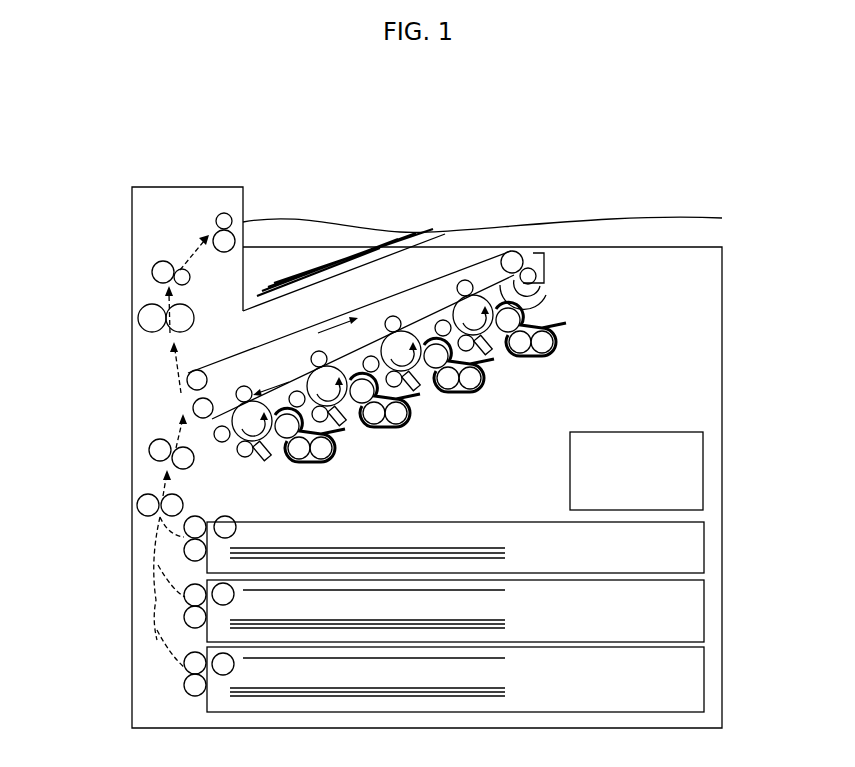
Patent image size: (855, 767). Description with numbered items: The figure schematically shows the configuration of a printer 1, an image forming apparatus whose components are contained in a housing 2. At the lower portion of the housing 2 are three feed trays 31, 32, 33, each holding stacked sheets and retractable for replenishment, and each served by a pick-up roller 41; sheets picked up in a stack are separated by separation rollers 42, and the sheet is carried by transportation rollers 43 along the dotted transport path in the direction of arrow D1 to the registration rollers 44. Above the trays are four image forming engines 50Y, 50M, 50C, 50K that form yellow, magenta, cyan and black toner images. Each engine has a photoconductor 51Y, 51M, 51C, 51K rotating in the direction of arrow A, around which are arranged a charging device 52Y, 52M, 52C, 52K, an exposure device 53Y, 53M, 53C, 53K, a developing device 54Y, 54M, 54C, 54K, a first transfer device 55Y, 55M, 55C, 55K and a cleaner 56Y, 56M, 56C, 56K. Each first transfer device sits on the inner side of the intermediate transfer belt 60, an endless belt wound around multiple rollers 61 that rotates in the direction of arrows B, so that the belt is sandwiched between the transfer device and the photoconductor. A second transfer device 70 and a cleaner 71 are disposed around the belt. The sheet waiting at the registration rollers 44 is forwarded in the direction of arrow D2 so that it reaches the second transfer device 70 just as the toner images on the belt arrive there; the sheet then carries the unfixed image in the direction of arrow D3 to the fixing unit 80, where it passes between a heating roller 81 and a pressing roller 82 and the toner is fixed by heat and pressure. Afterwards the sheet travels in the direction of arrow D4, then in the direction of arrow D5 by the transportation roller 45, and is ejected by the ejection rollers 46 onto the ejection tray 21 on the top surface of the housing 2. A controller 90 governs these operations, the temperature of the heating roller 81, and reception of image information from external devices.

The printer 1 is at (592, 172).
The housing 2 is at (723, 299).
The ejection tray 21 is at (446, 243).
The feed tray 31 is at (704, 543).
The feed tray 32 is at (704, 611).
The feed tray 33 is at (704, 681).
The pick-up roller 41 is at (236, 524).
The separation roller 42 is at (196, 516).
The transportation roller 43 is at (138, 505).
The registration roller 44 is at (150, 451).
The transportation roller 45 is at (156, 266).
The ejection roller 46 is at (221, 212).
The image forming engine 50K is at (302, 417).
The image forming engine 50C is at (368, 384).
The image forming engine 50M is at (432, 357).
The image forming engine 50Y is at (518, 304).
The photoconductor 51K is at (243, 404).
The photoconductor 51C is at (318, 368).
The photoconductor 51M is at (392, 336).
The photoconductor 51Y is at (465, 300).
The charging device 52K is at (248, 458).
The charging device 52C is at (340, 428).
The charging device 52M is at (412, 395).
The charging device 52Y is at (485, 362).
The exposure device 53K is at (306, 464).
The exposure device 53C is at (382, 430).
The exposure device 53M is at (456, 393).
The exposure device 53Y is at (535, 340).
The developing device 54K is at (287, 426).
The developing device 54C is at (362, 391).
The developing device 54M is at (436, 356).
The developing device 54Y is at (566, 323).
The first transfer device 55K is at (246, 386).
The first transfer device 55C is at (318, 350).
The first transfer device 55M is at (392, 316).
The first transfer device 55Y is at (466, 281).
The cleaner 56K is at (222, 443).
The cleaner 56C is at (293, 392).
The cleaner 56M is at (368, 358).
The cleaner 56Y is at (443, 320).
The intermediate transfer belt 60 is at (550, 292).
The roller 61 is at (514, 251).
The second transfer device 70 is at (193, 408).
The cleaner 71 is at (548, 276).
The fixing unit 80 is at (122, 314).
The heating roller 81 is at (146, 313).
The pressing roller 82 is at (166, 320).
The controller 90 is at (676, 431).
The rotation direction of intermediate transfer belt B is at (309, 354).
The sheet transport direction D1 is at (155, 483).
The sheet transport direction D2 is at (169, 431).
The sheet transport direction D3 is at (164, 367).
The sheet transport direction D4 is at (155, 309).
The sheet transport direction D5 is at (187, 252).